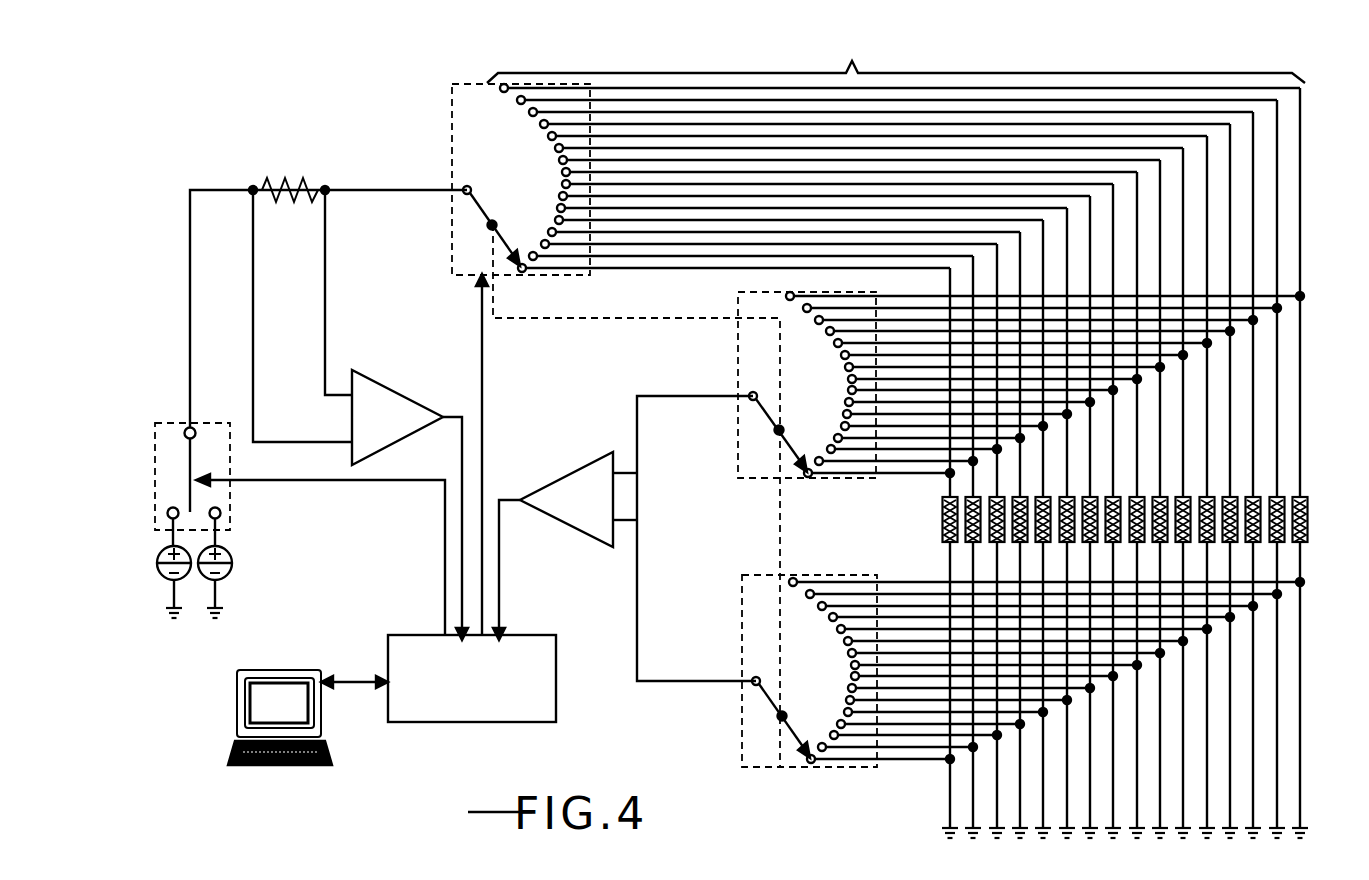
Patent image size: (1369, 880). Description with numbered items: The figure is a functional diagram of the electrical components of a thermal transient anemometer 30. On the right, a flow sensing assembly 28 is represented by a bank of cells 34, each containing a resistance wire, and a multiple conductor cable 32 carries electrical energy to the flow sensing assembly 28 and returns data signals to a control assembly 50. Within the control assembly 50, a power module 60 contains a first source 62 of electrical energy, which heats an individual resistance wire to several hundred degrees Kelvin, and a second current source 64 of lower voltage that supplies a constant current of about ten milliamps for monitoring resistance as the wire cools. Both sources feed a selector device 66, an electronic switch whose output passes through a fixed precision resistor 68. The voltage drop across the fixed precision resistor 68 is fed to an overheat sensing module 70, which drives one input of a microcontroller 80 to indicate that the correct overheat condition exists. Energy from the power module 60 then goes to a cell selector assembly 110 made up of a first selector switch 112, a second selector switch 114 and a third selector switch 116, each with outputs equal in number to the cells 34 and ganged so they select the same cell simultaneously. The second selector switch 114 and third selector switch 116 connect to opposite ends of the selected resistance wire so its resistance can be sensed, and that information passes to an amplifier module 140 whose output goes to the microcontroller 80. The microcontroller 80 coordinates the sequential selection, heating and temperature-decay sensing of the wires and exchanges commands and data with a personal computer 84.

The flow sensing assembly 28 is at (1322, 531).
The thermal transient anemometer 30 is at (196, 98).
The multiple conductor cable 32 is at (1308, 445).
The cell 34 is at (1310, 520).
The control unit or assembly 50 is at (388, 108).
The power module or assembly 60 is at (199, 177).
The first source of electrical energy 62 is at (157, 572).
The second current source 64 is at (232, 568).
The selector device 66 is at (140, 440).
The fixed precision resistor 68 is at (290, 165).
The overheat sensing assembly or module 70 is at (393, 365).
The microcontroller 80 is at (558, 653).
The personal computer 84 is at (230, 693).
The cell selector assembly or module 110 is at (896, 153).
The first selector switch 112 is at (452, 108).
The second selector switch 114 is at (736, 385).
The third selector switch 116 is at (740, 605).
The amplifier module or assembly 140 is at (567, 466).